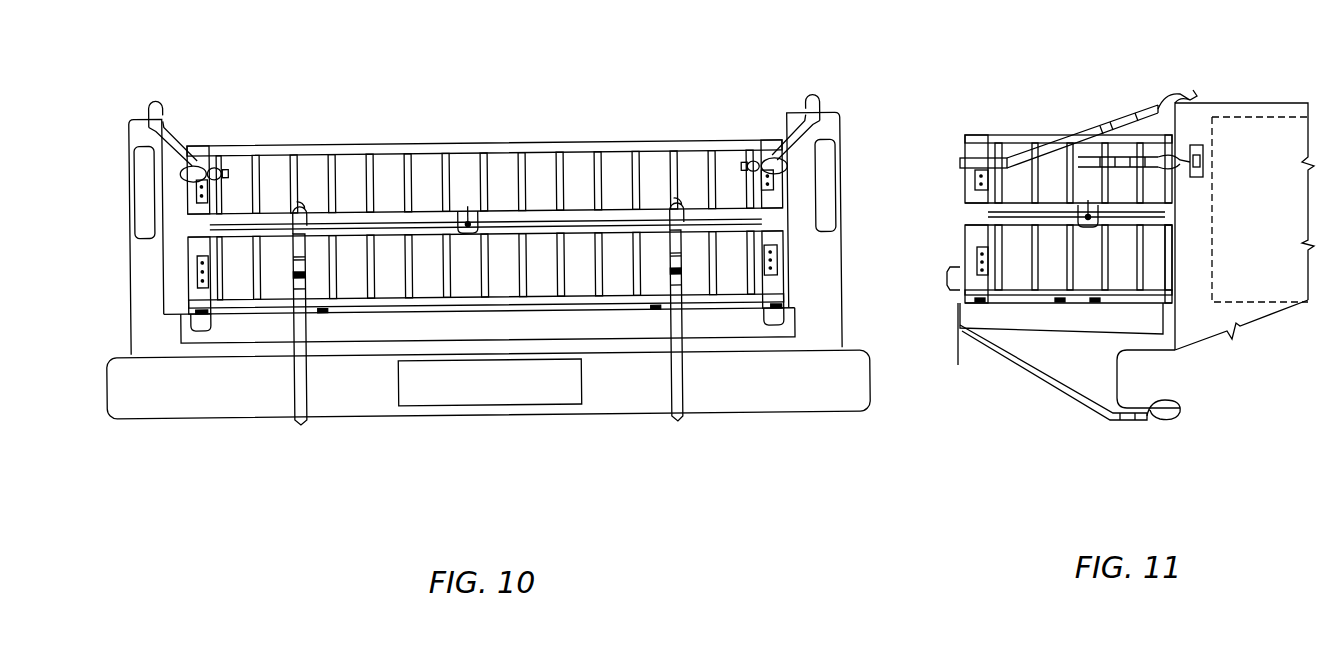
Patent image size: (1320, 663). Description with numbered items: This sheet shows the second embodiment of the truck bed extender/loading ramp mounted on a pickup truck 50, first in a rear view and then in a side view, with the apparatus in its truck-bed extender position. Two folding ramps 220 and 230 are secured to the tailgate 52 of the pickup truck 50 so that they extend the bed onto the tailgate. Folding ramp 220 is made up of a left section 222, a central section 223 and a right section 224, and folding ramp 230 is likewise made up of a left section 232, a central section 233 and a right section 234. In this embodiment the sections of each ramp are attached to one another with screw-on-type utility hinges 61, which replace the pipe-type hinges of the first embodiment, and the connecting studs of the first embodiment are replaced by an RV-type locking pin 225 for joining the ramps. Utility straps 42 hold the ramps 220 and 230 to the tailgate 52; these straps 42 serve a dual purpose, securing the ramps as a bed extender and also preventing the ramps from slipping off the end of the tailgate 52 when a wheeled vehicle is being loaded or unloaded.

In FIG. 10, the utility straps 42 is at (163, 103).
In FIG. 11, the utility straps 42 is at (1140, 103).
In FIG. 10, the pickup truck 50 is at (168, 420).
In FIG. 11, the pickup truck 50 is at (1262, 323).
In FIG. 10, the tailgate 52 is at (267, 345).
In FIG. 11, the tailgate 52 is at (997, 330).
In FIG. 10, the screw-on-type utility hinges 61 is at (196, 186).
In FIG. 11, the screw-on-type utility hinges 61 is at (958, 312).
In FIG. 10, the folding ramp 220 is at (537, 141).
In FIG. 11, the folding ramp 220 is at (1068, 184).
In FIG. 10, the left section of folding ramp 222 is at (188, 210).
In FIG. 11, the left section of folding ramp 222 is at (1143, 182).
In FIG. 10, the central section of folding ramp 223 is at (428, 141).
In FIG. 11, the central section of folding ramp 223 is at (963, 148).
In FIG. 10, the right section of folding ramp 224 is at (787, 195).
In FIG. 11, the right section of folding ramp 224 is at (1012, 135).
In FIG. 10, the RV-type locking pin 225 is at (470, 233).
In FIG. 11, the RV-type locking pin 225 is at (1085, 207).
In FIG. 10, the folding ramp 230 is at (438, 310).
In FIG. 11, the folding ramp 230 is at (1069, 257).
In FIG. 10, the left section of folding ramp 232 is at (188, 275).
In FIG. 11, the left section of folding ramp 232 is at (1148, 243).
In FIG. 10, the central section of folding ramp 233 is at (393, 310).
In FIG. 11, the central section of folding ramp 233 is at (968, 257).
In FIG. 10, the right section of folding ramp 234 is at (783, 272).
In FIG. 11, the right section of folding ramp 234 is at (1047, 302).